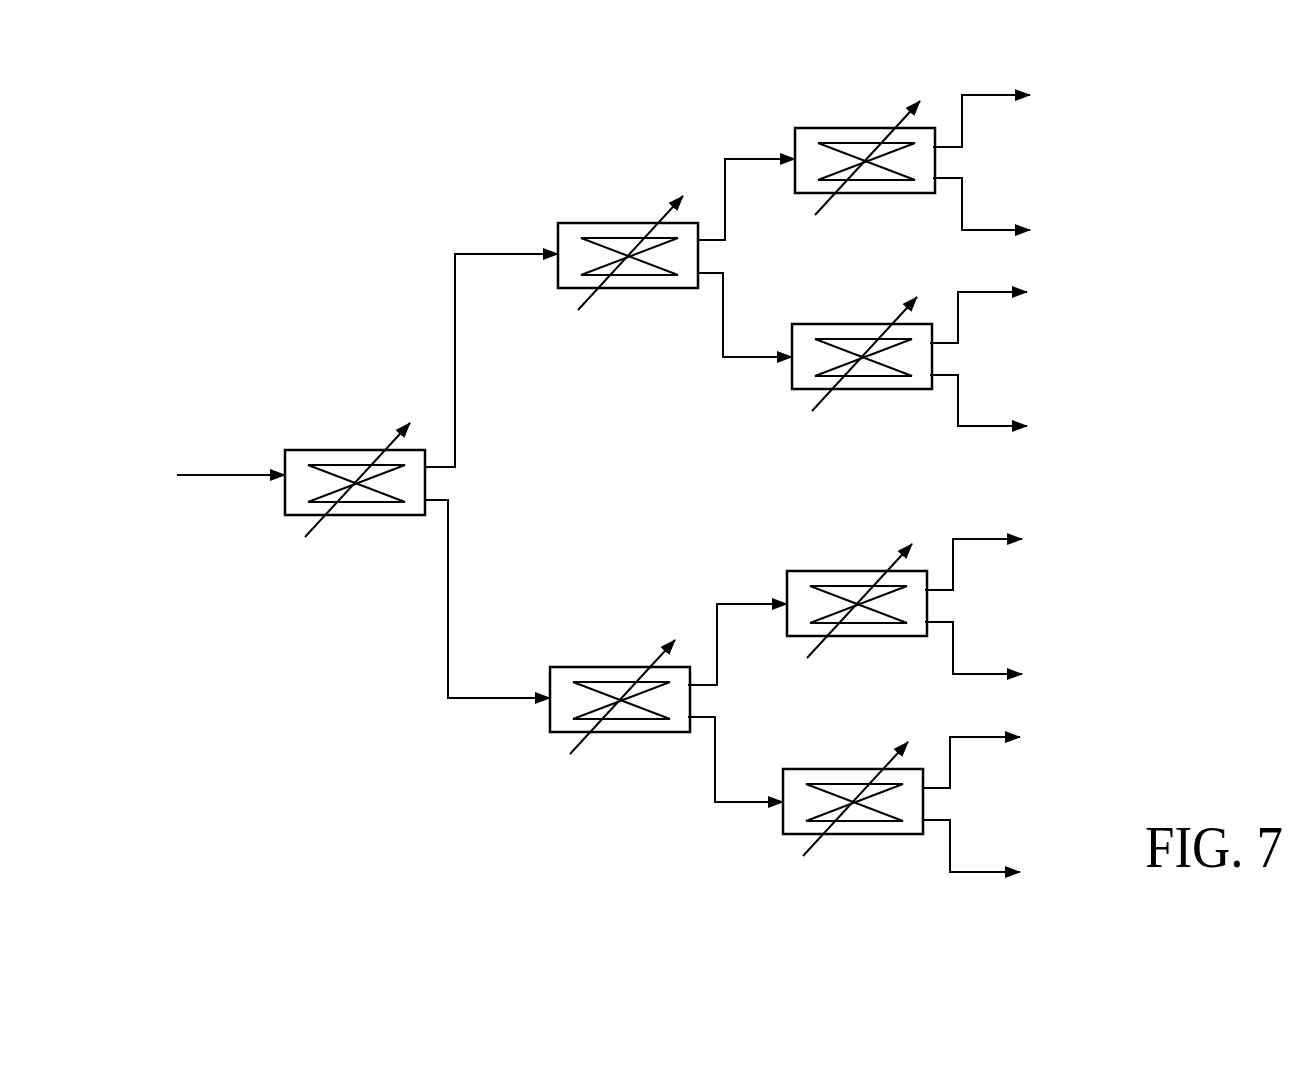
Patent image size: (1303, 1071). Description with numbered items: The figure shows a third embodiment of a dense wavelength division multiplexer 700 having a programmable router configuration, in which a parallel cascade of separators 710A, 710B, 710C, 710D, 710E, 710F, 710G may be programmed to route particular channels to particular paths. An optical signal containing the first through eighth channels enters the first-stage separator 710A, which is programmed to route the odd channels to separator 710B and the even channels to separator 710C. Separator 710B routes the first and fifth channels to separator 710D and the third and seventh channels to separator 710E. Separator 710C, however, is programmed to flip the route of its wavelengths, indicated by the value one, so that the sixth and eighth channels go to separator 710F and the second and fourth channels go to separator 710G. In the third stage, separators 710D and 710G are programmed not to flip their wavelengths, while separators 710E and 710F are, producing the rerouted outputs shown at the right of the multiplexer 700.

The dense wavelength division multiplexer 700 is at (1231, 204).
The separator 710A is at (318, 450).
The separator 710B is at (590, 223).
The separator 710C is at (582, 667).
The separator 710D is at (820, 128).
The separator 710E is at (818, 324).
The separator 710F is at (812, 571).
The separator 710G is at (808, 769).